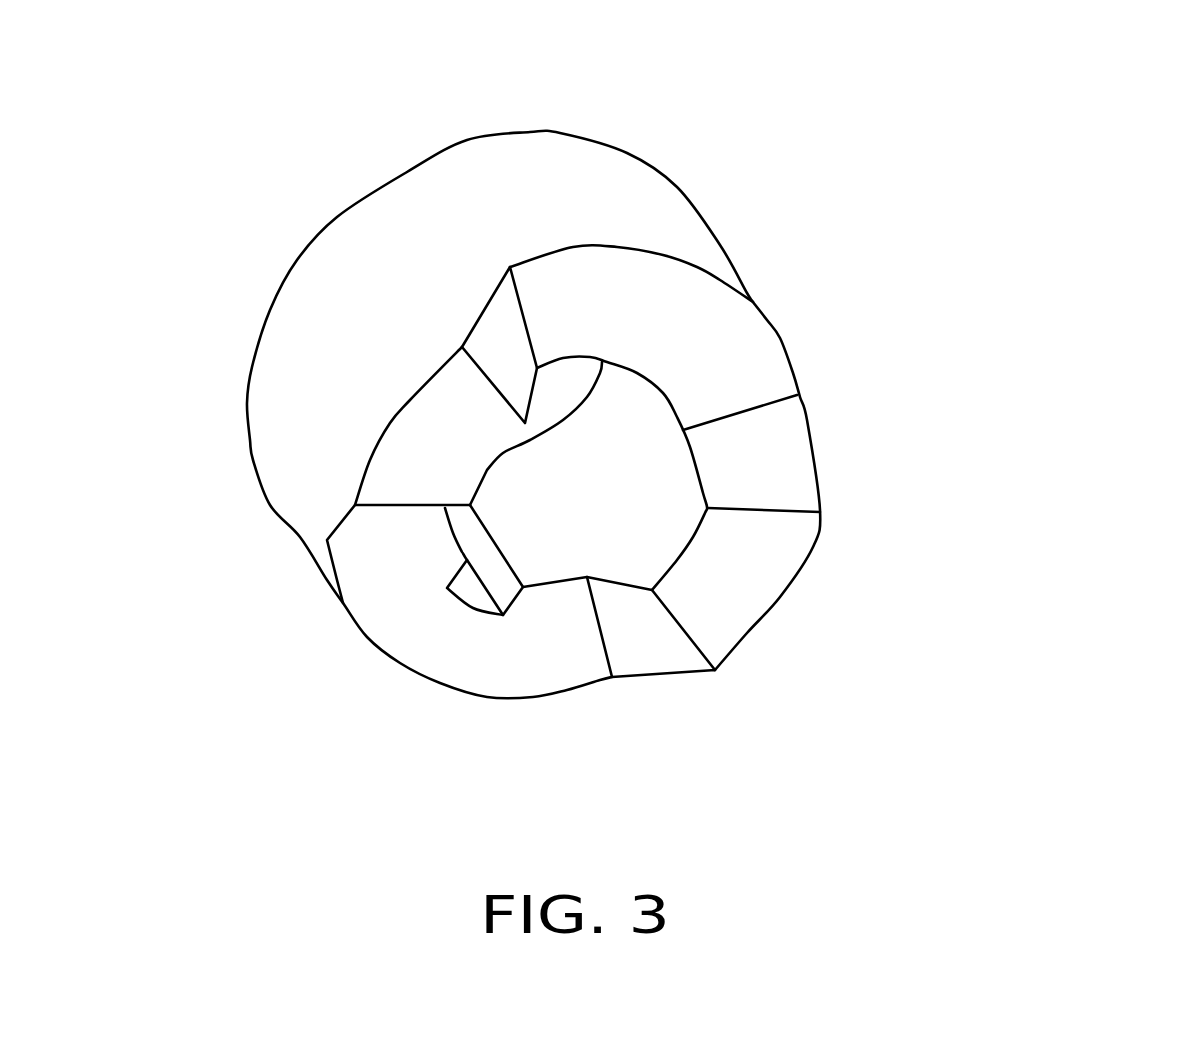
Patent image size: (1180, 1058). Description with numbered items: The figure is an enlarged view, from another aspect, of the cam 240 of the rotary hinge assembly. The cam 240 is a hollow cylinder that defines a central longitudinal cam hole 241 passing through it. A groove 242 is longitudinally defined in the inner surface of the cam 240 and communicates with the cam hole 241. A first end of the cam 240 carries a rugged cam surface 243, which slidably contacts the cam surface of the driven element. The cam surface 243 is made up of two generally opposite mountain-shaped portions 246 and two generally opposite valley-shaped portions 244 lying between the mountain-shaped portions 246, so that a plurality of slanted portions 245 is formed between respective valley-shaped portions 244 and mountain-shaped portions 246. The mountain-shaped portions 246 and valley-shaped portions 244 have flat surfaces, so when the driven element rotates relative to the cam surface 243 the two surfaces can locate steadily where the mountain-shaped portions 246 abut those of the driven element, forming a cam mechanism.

The cam 240 is at (597, 127).
The cam hole 241 is at (553, 400).
The groove 242 is at (465, 597).
The cam surface 243 is at (1033, 295).
The valley-shaped portion 244 is at (735, 378).
The slanted portion 245 is at (773, 477).
The mountain-shaped portion 246 is at (743, 572).